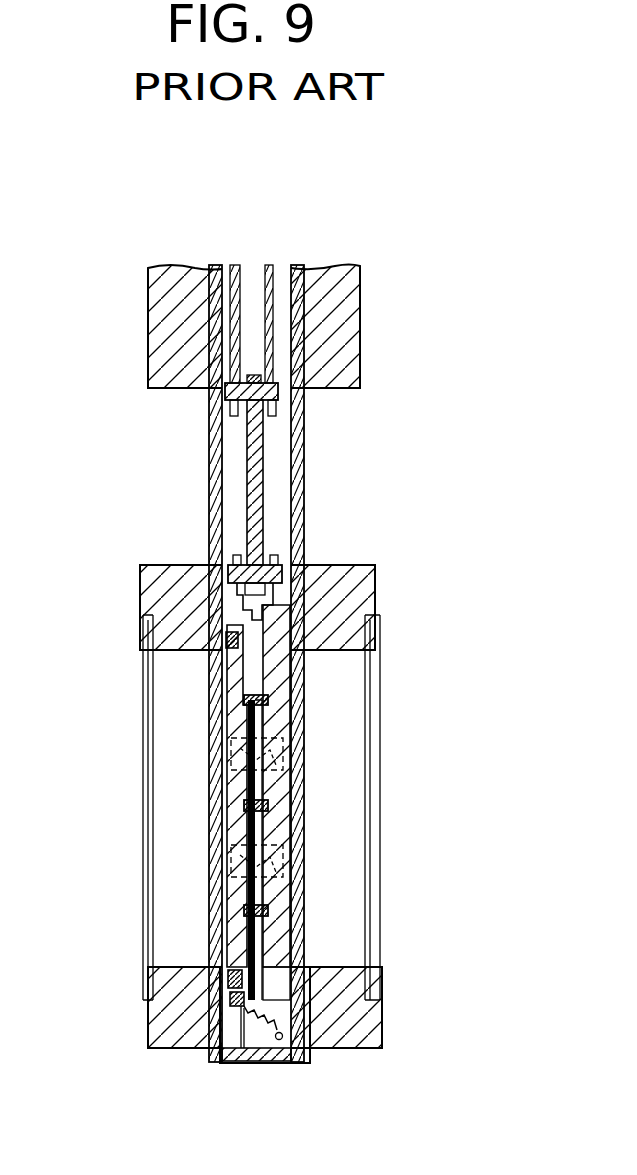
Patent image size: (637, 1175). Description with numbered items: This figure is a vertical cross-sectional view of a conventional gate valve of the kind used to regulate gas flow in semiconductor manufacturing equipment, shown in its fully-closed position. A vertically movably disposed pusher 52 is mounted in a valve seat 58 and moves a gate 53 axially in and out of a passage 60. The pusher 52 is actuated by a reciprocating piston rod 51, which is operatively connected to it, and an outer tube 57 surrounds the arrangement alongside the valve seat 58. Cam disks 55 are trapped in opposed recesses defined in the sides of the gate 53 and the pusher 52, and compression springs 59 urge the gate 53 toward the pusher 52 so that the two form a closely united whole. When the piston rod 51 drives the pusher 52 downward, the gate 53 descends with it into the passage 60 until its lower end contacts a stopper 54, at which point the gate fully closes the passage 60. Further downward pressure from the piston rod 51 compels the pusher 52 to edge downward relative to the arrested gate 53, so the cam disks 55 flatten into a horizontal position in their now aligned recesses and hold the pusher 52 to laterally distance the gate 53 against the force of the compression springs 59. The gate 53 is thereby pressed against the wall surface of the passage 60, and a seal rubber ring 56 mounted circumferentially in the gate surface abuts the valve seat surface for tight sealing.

The piston rod 51 is at (256, 432).
The pusher 52 is at (284, 826).
The gate 53 is at (232, 777).
The stopper 54 is at (241, 1050).
The cam disks 55 is at (284, 695).
The seal rubber ring 56 is at (232, 646).
The outer tube 57 is at (296, 497).
The valve seat 58 is at (215, 498).
The compression springs 59 is at (280, 755).
The passage 60 is at (186, 965).